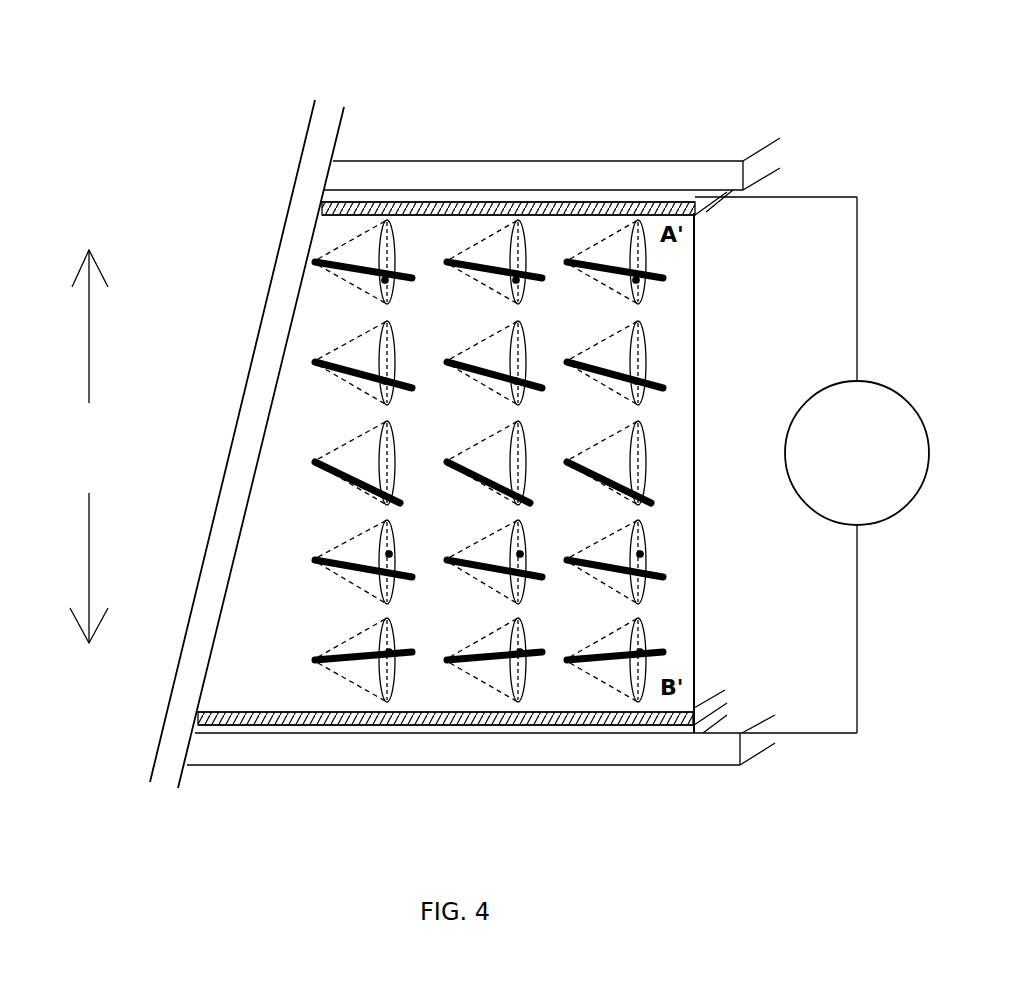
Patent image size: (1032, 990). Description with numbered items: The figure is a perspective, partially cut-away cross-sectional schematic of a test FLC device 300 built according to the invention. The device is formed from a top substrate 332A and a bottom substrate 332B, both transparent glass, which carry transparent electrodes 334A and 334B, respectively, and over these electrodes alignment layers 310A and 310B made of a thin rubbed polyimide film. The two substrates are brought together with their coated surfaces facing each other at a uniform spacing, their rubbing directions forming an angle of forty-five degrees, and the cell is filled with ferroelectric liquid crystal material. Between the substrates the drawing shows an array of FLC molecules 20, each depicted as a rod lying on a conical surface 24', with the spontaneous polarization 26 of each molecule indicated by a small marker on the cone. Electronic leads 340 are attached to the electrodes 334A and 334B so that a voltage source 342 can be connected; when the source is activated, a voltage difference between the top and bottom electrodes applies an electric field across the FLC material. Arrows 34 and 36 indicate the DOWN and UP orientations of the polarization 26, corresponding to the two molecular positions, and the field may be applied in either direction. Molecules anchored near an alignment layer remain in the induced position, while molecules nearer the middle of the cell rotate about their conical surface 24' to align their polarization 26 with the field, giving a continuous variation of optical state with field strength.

The test FLC device 300 is at (418, 107).
The top substrate 332A is at (460, 167).
The transparent electrode 334A is at (527, 197).
The alignment layer 310A is at (702, 212).
The bottom substrate 332B is at (277, 752).
The transparent electrode 334B is at (377, 728).
The alignment layer 310B is at (240, 712).
The electronic leads 340 is at (857, 270).
The voltage source 342 is at (790, 422).
The arrow 36 is at (89, 337).
The arrow 34 is at (89, 543).
The conical surface 24' is at (468, 461).
The FLC molecule 20 is at (603, 275).
The polarization 26 is at (638, 287).